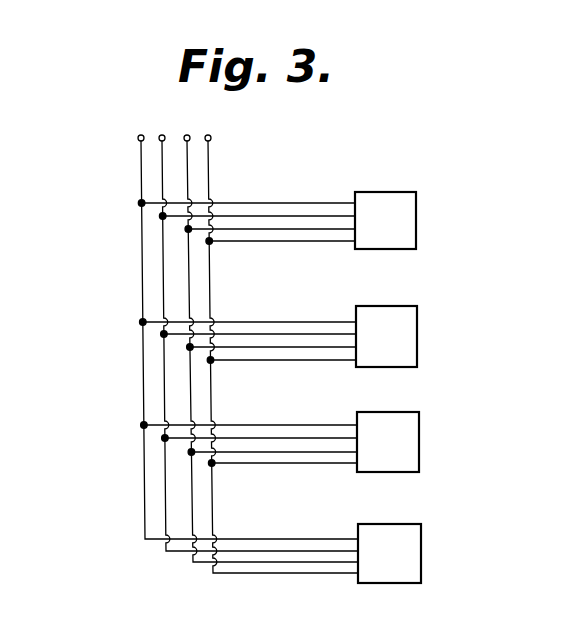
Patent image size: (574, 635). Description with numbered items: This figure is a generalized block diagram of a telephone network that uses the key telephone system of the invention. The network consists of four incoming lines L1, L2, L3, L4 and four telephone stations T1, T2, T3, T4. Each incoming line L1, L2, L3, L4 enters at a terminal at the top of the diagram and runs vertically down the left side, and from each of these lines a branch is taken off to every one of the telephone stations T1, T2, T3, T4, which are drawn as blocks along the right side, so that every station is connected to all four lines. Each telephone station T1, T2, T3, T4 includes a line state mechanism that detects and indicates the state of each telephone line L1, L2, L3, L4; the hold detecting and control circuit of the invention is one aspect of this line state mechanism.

The incoming line L1 is at (138, 138).
The incoming line L2 is at (162, 135).
The incoming line L3 is at (187, 135).
The incoming line L4 is at (211, 136).
The telephone station T1 is at (405, 224).
The telephone station T2 is at (408, 333).
The telephone station T3 is at (419, 445).
The telephone station T4 is at (413, 553).